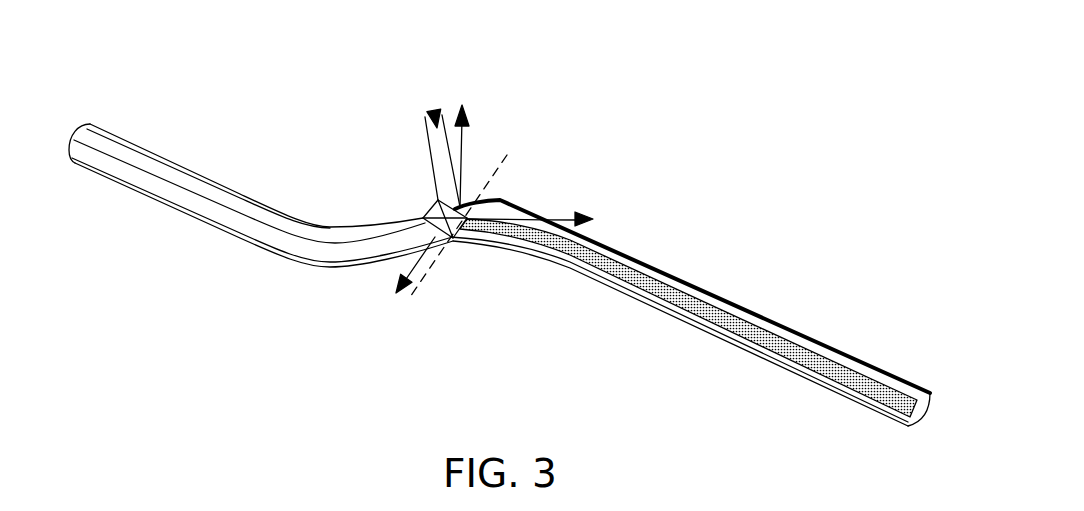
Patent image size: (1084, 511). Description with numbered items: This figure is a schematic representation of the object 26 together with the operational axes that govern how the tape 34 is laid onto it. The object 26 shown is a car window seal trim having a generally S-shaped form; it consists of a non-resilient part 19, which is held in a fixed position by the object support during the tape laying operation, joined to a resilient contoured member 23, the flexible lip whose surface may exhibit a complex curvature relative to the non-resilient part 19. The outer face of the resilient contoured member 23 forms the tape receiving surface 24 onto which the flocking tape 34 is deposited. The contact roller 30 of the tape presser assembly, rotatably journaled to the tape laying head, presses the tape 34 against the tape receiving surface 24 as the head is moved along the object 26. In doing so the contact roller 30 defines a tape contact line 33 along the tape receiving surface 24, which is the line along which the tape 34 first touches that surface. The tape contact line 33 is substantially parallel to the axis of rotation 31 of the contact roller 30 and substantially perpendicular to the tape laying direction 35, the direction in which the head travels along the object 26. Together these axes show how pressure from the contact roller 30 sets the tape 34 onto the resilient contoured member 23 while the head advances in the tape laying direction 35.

The non-resilient part of the object 19 is at (105, 143).
The tape 34 is at (436, 115).
The contact roller 30 is at (426, 213).
The tape contact line 33 is at (500, 178).
The axis of rotation 31 is at (396, 268).
The tape laying direction 35 is at (582, 216).
The object 26 is at (763, 313).
The tape receiving surface 24 is at (658, 297).
The resilient contoured member 23 is at (830, 383).